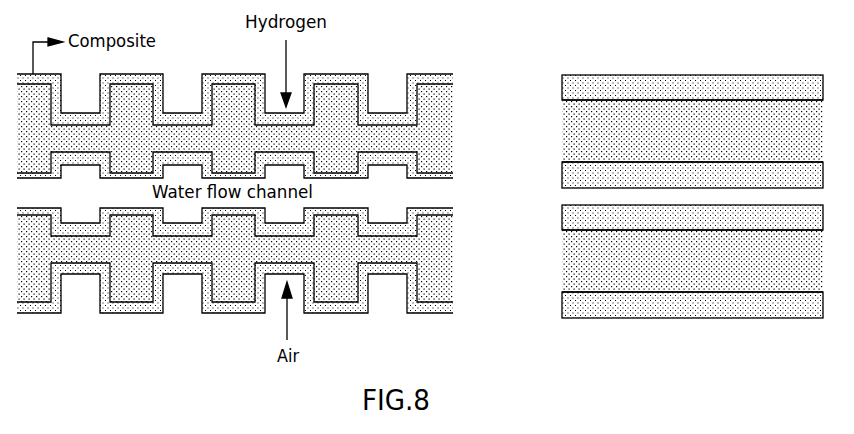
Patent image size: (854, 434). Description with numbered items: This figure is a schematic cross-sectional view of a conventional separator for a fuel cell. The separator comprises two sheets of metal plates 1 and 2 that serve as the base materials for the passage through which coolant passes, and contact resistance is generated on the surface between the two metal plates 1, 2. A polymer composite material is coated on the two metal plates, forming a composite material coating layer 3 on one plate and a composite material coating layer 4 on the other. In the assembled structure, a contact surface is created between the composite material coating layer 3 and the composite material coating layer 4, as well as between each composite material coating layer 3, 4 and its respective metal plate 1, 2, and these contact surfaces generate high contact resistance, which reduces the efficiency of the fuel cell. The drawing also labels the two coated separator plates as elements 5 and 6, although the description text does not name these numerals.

The metal plate 1 is at (573, 138).
The metal plate 2 is at (442, 262).
The composite material coating layer 3 is at (573, 176).
The composite material coating layer 4 is at (568, 218).
The first separator 5 is at (420, 106).
The second separator 6 is at (420, 279).